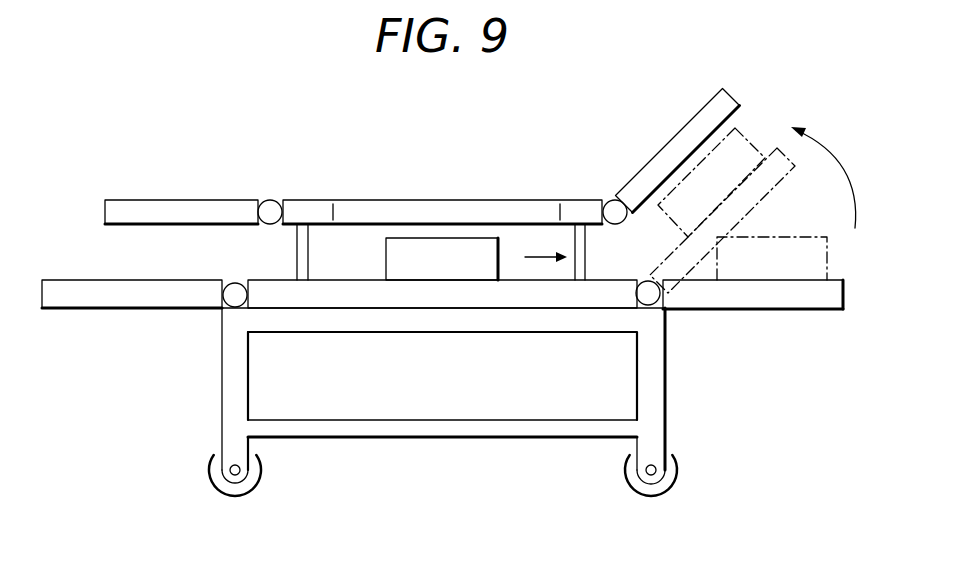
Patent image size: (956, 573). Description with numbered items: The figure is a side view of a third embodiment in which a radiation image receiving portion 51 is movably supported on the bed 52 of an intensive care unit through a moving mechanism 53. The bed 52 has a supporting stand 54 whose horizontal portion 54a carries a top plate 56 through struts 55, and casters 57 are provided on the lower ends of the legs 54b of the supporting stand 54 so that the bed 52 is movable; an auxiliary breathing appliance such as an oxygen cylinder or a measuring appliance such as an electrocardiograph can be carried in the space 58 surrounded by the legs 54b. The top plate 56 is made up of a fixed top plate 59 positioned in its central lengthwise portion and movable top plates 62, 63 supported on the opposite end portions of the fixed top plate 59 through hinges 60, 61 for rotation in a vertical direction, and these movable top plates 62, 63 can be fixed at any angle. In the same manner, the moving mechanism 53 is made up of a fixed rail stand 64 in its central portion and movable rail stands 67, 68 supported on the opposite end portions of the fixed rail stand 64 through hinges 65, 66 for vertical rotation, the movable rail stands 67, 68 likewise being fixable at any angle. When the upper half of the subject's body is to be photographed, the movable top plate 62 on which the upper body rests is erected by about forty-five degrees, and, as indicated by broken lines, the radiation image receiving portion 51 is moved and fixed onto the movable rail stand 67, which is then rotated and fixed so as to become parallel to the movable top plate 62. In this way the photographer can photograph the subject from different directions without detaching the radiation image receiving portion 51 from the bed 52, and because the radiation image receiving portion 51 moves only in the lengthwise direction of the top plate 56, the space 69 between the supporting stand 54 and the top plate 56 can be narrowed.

The radiation image receiving portion 51 is at (407, 257).
The bed 52 is at (217, 173).
The moving mechanism 53 is at (512, 267).
The supporting stand 54 is at (482, 397).
The horizontal portion 54a is at (563, 320).
The legs 54b is at (648, 427).
The support post 55 is at (297, 252).
The top plate 56 is at (444, 187).
The casters 57 is at (673, 462).
The space 58 is at (337, 410).
The fixed top plate 59 is at (560, 208).
The hinge 60 is at (606, 208).
The hinge 61 is at (268, 208).
The movable top plate 62 is at (723, 103).
The movable top plate 63 is at (138, 208).
The fixed rail stand 64 is at (447, 296).
The hinge 65 is at (658, 310).
The hinge 66 is at (222, 308).
The movable rail stand 67 is at (812, 298).
The movable rail stand 68 is at (84, 300).
The space 69 is at (335, 240).